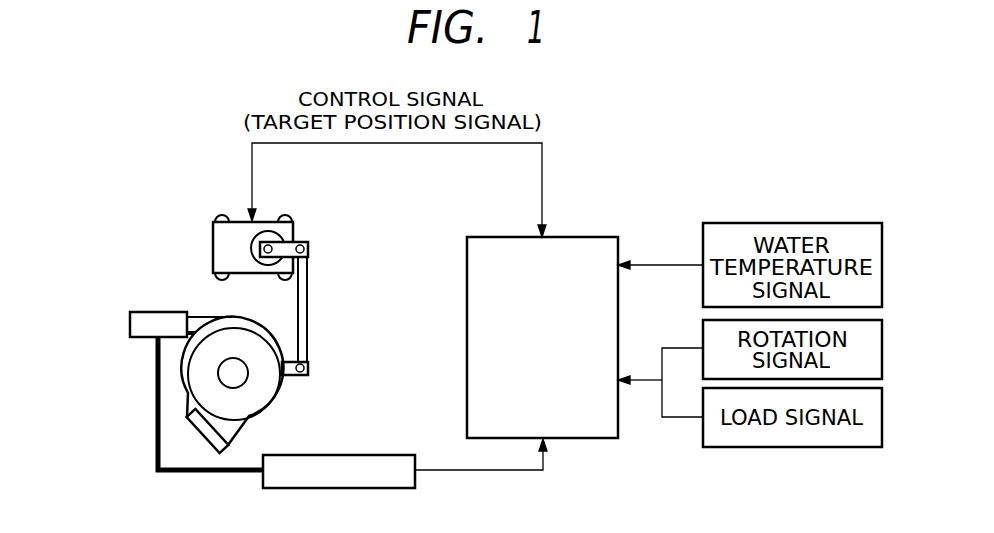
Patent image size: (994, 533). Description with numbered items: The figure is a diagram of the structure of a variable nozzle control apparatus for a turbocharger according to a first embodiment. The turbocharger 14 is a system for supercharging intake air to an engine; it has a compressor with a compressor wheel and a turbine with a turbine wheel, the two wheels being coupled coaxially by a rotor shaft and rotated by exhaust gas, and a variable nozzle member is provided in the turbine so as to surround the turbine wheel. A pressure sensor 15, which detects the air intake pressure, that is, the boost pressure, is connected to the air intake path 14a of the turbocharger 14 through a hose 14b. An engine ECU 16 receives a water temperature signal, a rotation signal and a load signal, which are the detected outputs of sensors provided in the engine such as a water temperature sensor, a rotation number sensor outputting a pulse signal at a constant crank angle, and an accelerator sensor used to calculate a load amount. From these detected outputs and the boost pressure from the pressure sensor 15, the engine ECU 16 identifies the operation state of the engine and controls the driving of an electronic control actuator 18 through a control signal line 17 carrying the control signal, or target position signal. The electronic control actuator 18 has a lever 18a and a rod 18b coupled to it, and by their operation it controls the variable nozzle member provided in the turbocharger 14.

The turbocharger 14 is at (226, 340).
The air intake path 14a is at (140, 340).
The hose 14b is at (157, 452).
The pressure sensor 15 is at (383, 455).
The engine ECU 16 is at (593, 237).
The control signal line 17 is at (542, 168).
The electronic control actuator 18 is at (267, 221).
The lever 18a is at (308, 292).
The rod 18b is at (290, 377).